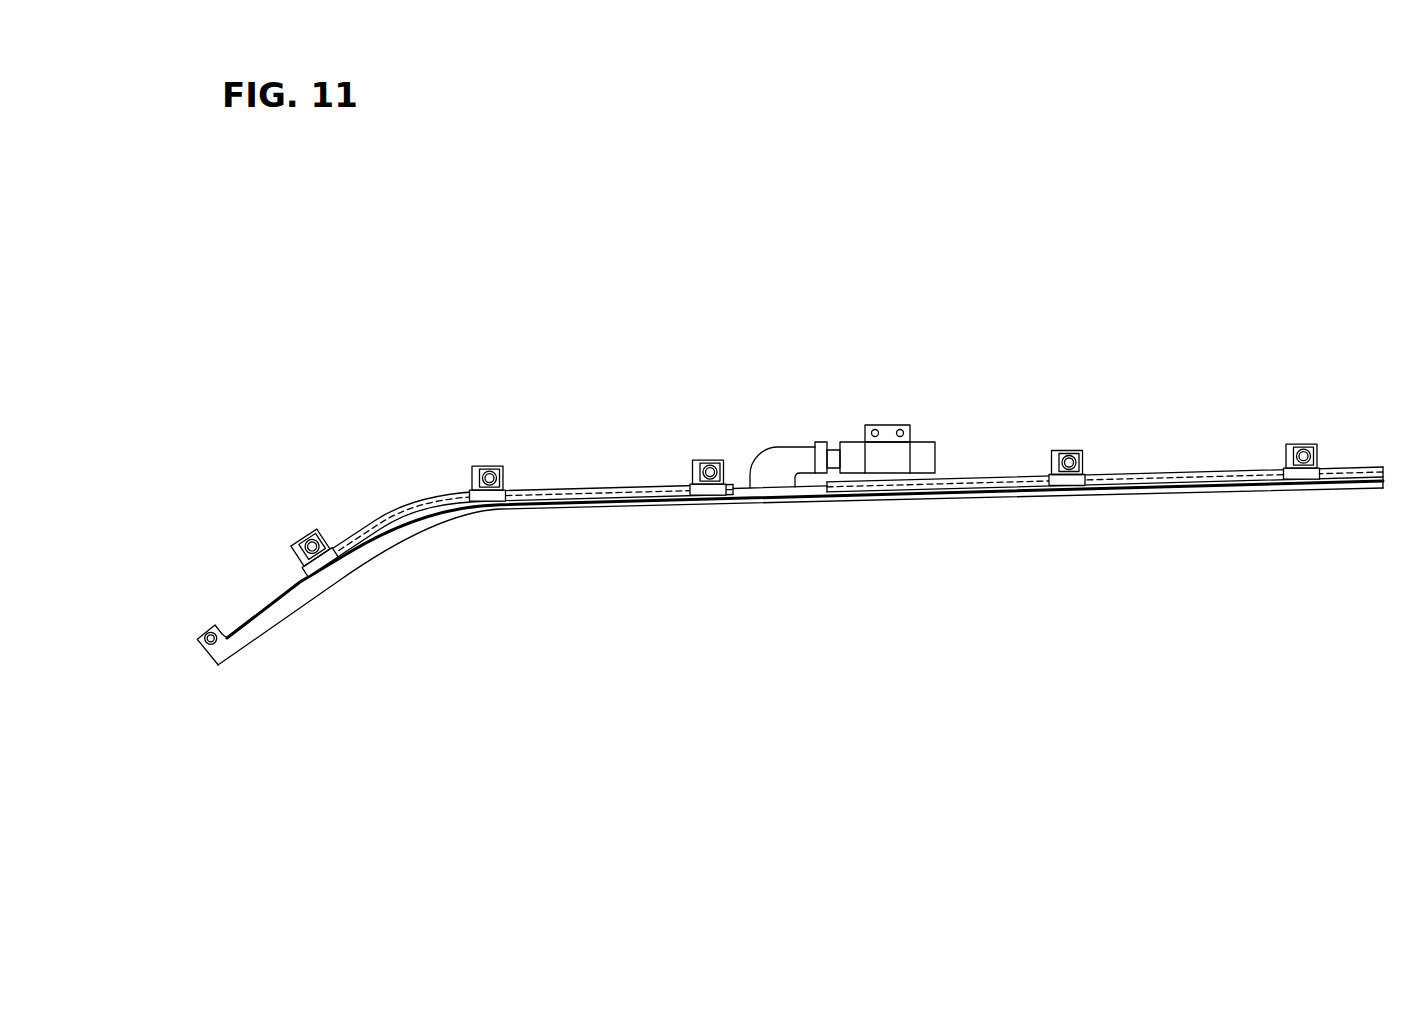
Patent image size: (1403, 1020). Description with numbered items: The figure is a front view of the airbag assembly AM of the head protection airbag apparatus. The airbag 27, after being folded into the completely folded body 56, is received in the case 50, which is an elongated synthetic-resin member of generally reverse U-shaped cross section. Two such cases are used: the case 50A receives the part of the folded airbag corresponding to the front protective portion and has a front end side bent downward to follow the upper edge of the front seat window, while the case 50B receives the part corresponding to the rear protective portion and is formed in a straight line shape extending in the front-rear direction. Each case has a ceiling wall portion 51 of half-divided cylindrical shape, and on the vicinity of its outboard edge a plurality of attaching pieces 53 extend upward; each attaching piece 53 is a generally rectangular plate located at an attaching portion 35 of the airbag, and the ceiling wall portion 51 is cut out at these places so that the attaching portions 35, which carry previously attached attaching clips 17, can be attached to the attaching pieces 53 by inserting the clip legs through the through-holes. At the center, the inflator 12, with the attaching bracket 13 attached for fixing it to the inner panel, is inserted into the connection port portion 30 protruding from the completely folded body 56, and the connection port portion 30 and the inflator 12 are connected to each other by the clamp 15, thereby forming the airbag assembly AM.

The airbag assembly AM is at (1215, 275).
The completely folded body 56 is at (790, 566).
The airbag 27 is at (768, 510).
The case 50 is at (843, 472).
The case 50A is at (518, 484).
The case 50B is at (1202, 442).
The ceiling wall portion 51 is at (565, 468).
The attaching piece 53 is at (324, 544).
The attaching portion 35 is at (294, 550).
The attaching clip 17 is at (205, 632).
The inflator 12 is at (876, 405).
The connection port portion 30 is at (781, 447).
The clamp 15 is at (822, 443).
The attaching bracket 13 is at (885, 447).